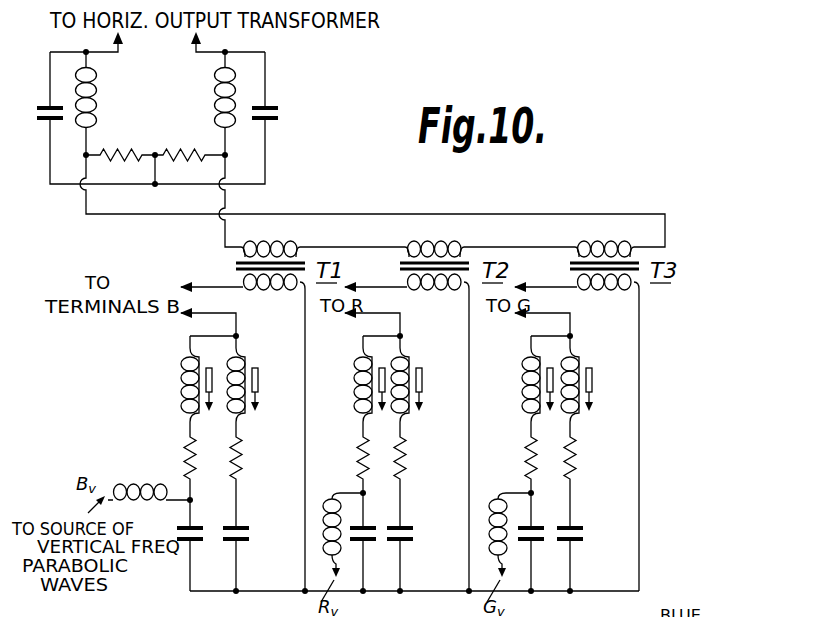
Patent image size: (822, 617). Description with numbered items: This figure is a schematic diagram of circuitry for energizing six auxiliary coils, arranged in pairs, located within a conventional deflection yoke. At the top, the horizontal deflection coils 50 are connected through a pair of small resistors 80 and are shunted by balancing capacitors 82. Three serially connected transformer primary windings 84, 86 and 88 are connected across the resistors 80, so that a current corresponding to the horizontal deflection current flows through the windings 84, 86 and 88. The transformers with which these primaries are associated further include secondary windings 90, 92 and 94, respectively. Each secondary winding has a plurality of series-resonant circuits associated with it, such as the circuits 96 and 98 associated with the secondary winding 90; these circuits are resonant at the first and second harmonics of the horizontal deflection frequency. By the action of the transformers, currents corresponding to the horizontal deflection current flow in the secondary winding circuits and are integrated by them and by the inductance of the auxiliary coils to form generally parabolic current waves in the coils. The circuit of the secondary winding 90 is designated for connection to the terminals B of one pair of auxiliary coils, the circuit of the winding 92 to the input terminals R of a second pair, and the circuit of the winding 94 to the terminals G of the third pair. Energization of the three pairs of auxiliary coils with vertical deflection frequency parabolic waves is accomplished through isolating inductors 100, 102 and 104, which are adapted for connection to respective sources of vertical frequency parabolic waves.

The horizontal deflection coils 50 is at (93, 119).
The small resistors 80 is at (176, 150).
The balancing capacitors 82 is at (44, 114).
The transformer primary winding 84 is at (287, 240).
The transformer primary winding 86 is at (442, 240).
The transformer primary winding 88 is at (609, 240).
The secondary winding 90 is at (288, 293).
The secondary winding 92 is at (452, 293).
The secondary winding 94 is at (622, 293).
The series-resonant circuit 96 is at (171, 446).
The series-resonant circuit 98 is at (228, 451).
The isolating inductor 100 is at (158, 491).
The isolating inductor 102 is at (343, 481).
The isolating inductor 104 is at (509, 481).